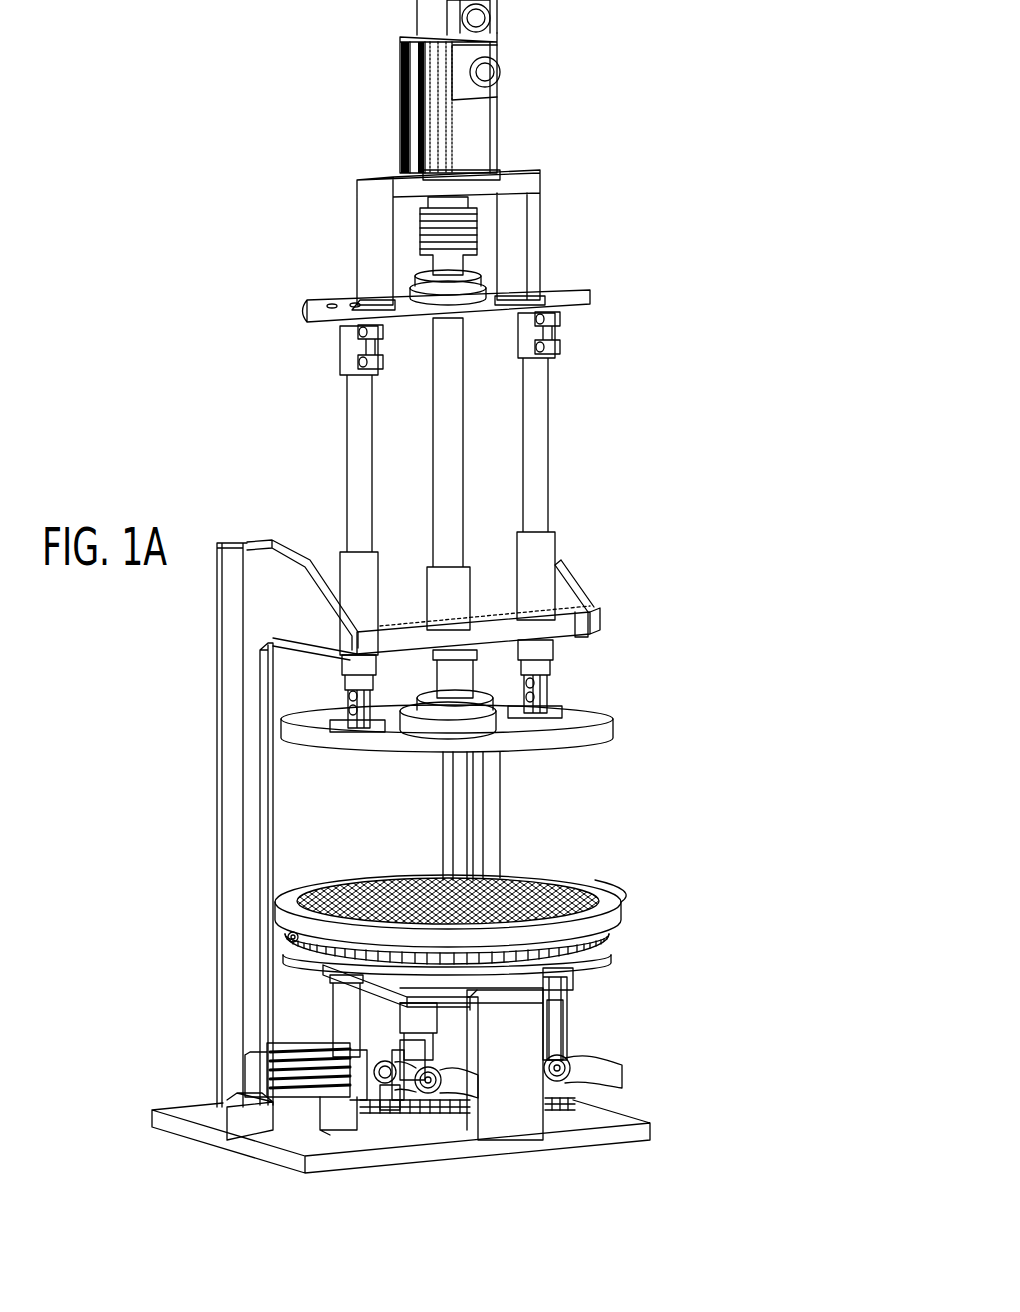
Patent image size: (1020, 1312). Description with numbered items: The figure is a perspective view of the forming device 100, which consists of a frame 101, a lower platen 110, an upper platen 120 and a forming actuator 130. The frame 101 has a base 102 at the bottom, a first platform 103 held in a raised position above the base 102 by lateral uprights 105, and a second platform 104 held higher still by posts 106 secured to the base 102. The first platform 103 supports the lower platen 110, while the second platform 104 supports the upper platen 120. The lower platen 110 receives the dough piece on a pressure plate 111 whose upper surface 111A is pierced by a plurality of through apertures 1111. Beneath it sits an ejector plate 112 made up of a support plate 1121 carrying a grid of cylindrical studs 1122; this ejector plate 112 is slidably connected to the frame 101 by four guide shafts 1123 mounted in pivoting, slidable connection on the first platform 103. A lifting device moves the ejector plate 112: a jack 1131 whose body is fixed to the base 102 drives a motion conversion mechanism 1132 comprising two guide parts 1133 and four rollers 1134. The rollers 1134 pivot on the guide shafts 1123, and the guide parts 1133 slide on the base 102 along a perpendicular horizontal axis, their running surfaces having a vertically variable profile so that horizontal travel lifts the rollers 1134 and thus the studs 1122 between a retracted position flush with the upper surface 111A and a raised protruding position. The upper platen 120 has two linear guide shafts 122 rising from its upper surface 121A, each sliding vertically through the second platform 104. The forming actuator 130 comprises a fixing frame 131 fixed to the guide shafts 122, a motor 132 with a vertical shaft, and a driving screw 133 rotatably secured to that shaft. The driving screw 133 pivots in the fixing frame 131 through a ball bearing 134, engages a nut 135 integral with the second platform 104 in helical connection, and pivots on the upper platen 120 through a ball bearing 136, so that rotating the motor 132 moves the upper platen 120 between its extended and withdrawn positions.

The forming device 100 is at (132, 254).
The frame 101 is at (216, 1057).
The base 102 is at (630, 1140).
The first platform 103 is at (328, 975).
The second platform 104 is at (570, 640).
The lateral uprights 105 is at (550, 1116).
The posts 106 is at (502, 796).
The lower platen 110 is at (696, 905).
The pressure plate 111 is at (616, 892).
The upper surface 111A is at (597, 880).
The through apertures 1111 is at (360, 880).
The ejector plate 112 is at (598, 961).
The support plate 1121 is at (608, 943).
The studs 1122 is at (292, 938).
The guide shafts 1123 is at (558, 1028).
The upper platen 120 is at (656, 736).
The upper surface 121A is at (599, 722).
The linear guide shafts 122 is at (345, 445).
The forming actuator 130 is at (598, 94).
The fixing frame 131 is at (540, 240).
The motor 132 is at (400, 118).
The driving screw 133 is at (463, 455).
The ball bearing 134 is at (422, 326).
The nut 135 is at (429, 668).
The ball bearing 136 is at (413, 731).
The jack 1131 is at (282, 1106).
The motion conversion mechanism 1132 is at (448, 1129).
The guide parts 1133 is at (624, 1083).
The rollers 1134 is at (569, 1060).